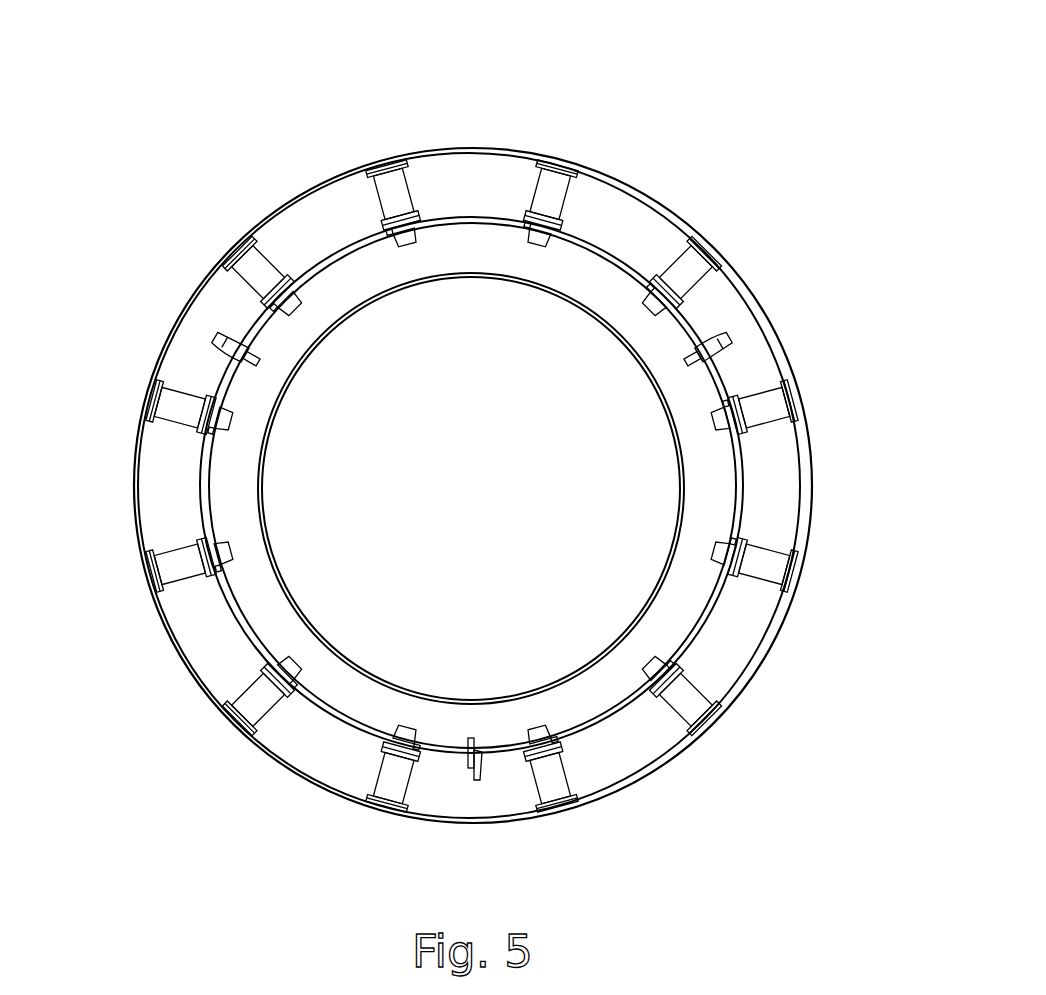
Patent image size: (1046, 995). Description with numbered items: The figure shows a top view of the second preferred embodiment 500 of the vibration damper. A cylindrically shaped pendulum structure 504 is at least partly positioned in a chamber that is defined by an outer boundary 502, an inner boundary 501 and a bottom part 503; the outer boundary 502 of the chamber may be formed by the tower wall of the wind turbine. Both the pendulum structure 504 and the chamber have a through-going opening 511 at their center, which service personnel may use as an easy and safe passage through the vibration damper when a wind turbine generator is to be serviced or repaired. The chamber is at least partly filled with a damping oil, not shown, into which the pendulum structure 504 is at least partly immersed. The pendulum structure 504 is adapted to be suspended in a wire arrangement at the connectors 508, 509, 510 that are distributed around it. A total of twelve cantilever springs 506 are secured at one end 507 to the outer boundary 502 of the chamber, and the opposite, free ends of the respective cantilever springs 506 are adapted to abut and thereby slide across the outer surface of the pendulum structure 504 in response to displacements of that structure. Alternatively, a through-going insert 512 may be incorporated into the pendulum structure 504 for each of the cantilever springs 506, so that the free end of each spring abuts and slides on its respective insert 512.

The second preferred embodiment 500 is at (632, 94).
The inner boundary 501 is at (677, 535).
The outer boundary 502 is at (812, 486).
The bottom part 503 is at (745, 367).
The pendulum structure 504 is at (713, 615).
The cantilever springs 506 is at (672, 698).
The end 507 is at (715, 720).
The connector 508 is at (708, 335).
The connector 509 is at (484, 768).
The connector 510 is at (215, 362).
The through-going opening 511 is at (479, 362).
The through-going insert 512 is at (650, 667).